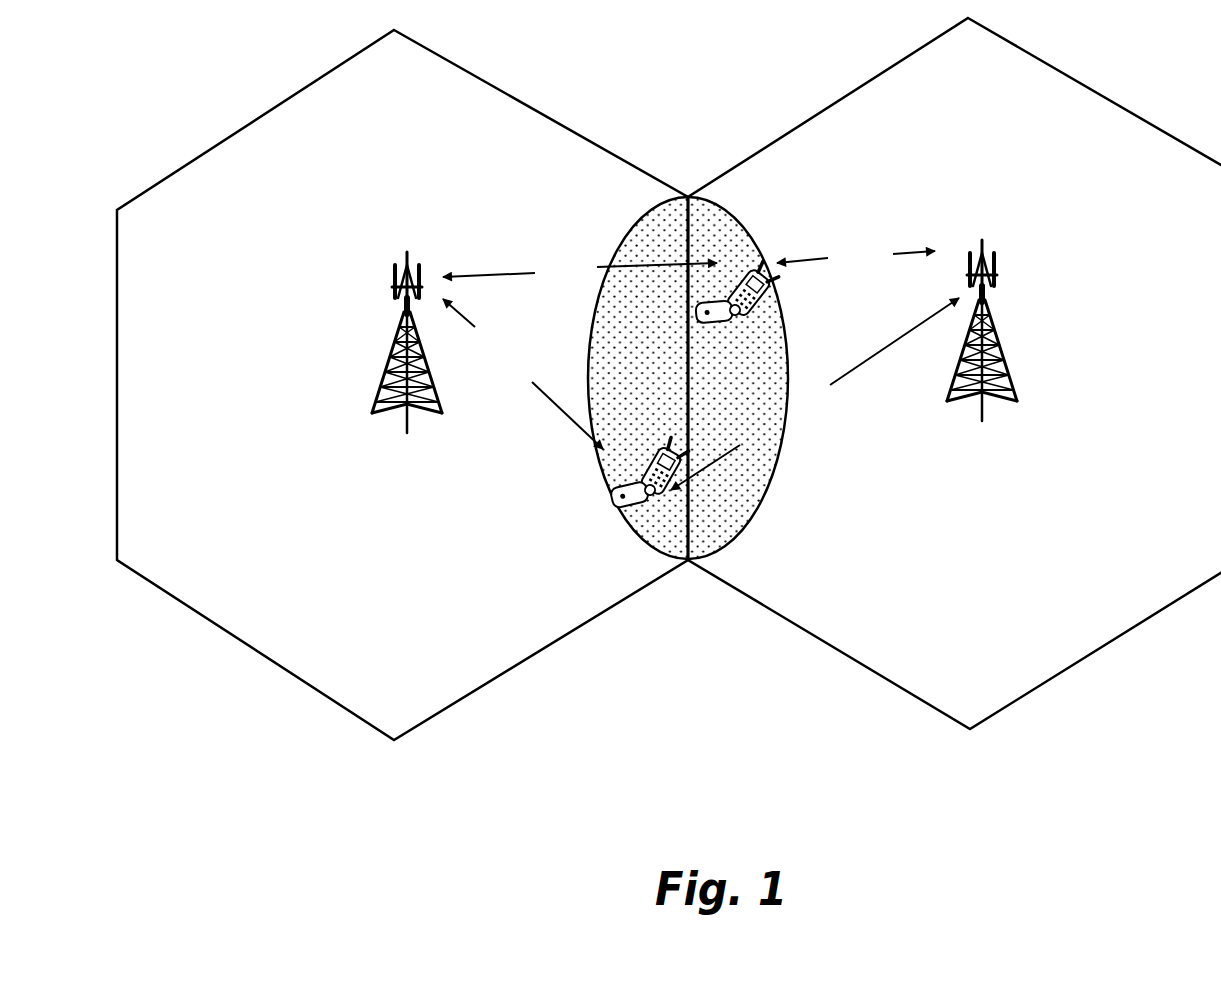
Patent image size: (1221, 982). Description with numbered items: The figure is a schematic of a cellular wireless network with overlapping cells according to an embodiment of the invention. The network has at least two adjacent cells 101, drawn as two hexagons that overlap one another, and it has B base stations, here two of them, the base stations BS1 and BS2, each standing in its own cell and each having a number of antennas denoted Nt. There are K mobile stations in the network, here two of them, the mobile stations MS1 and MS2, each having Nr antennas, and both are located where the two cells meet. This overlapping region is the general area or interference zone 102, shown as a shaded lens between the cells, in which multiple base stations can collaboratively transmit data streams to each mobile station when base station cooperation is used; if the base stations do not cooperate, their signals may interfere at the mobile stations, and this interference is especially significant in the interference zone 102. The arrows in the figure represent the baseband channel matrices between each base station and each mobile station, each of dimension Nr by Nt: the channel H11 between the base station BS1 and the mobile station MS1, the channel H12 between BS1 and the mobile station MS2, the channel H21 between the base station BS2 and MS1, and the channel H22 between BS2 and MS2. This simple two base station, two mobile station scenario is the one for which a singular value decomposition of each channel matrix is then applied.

The adjacent cells 101 is at (827, 106).
The interference zone 102 is at (780, 468).
The first base station BS1 is at (404, 363).
The second base station BS2 is at (981, 351).
The first mobile station MS1 is at (646, 465).
The second mobile station MS2 is at (733, 307).
The baseband channel matrix between BS1 and MS1 H11 is at (523, 374).
The baseband channel matrix between BS1 and MS2 H12 is at (580, 256).
The baseband channel matrix between BS2 and MS1 H21 is at (815, 394).
The baseband channel matrix between BS2 and MS2 H22 is at (856, 242).